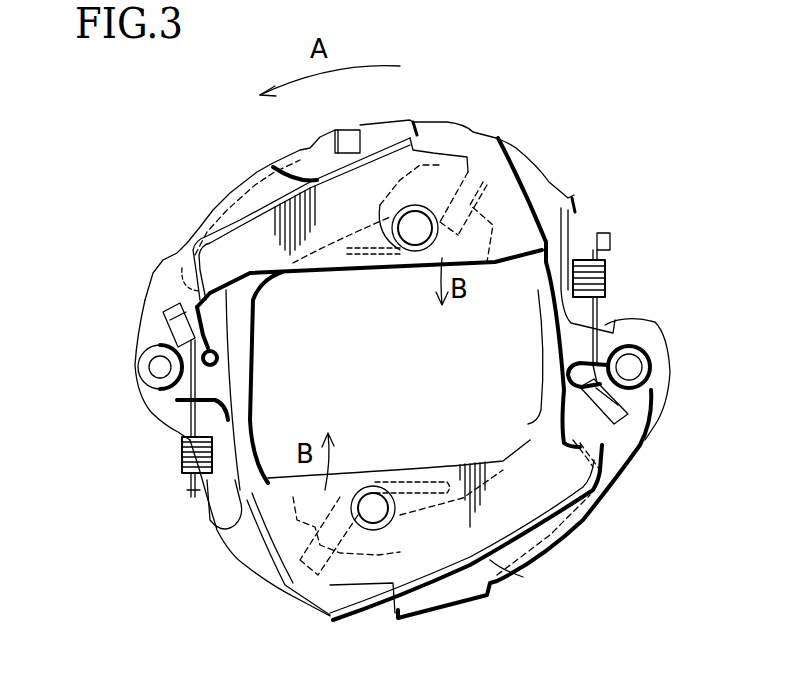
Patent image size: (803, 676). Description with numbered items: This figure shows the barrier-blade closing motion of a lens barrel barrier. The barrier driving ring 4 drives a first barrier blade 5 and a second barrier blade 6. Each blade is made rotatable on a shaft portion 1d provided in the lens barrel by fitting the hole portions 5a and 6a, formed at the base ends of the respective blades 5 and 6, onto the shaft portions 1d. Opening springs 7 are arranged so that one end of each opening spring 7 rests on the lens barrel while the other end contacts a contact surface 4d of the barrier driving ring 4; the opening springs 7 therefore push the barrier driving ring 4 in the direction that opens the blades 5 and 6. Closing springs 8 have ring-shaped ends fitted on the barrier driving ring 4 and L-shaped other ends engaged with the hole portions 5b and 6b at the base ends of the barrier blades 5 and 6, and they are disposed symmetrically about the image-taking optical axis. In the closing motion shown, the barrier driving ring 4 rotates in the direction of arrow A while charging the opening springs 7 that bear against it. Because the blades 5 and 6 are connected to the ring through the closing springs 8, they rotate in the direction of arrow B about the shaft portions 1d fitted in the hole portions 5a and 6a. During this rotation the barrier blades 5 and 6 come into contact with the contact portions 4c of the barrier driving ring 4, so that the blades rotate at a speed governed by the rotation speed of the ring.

The shaft portion 1d is at (158, 370).
The barrier driving ring 4 is at (552, 190).
The contact portion 4c is at (177, 397).
The contact surface 4d is at (490, 165).
The first barrier blade 5 is at (257, 237).
The hole portion 5a is at (140, 368).
The hole portion 5b is at (190, 340).
The second barrier blade 6 is at (553, 490).
The hole portion 6a is at (643, 353).
The hole portion 6b is at (632, 408).
The opening spring 7 is at (425, 212).
The closing spring 8 is at (180, 463).